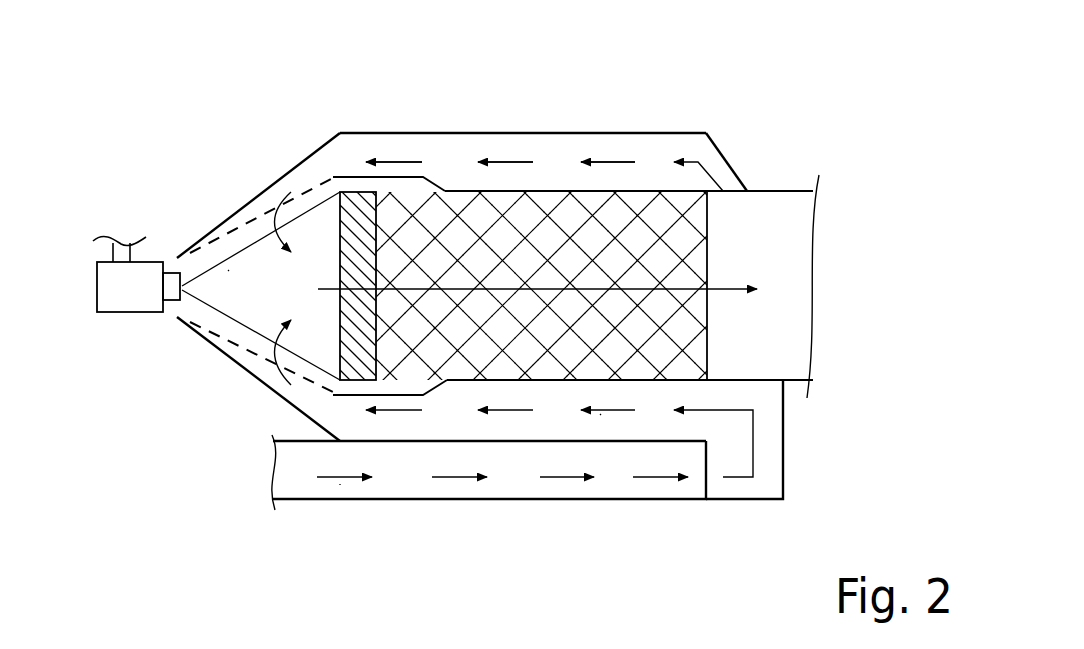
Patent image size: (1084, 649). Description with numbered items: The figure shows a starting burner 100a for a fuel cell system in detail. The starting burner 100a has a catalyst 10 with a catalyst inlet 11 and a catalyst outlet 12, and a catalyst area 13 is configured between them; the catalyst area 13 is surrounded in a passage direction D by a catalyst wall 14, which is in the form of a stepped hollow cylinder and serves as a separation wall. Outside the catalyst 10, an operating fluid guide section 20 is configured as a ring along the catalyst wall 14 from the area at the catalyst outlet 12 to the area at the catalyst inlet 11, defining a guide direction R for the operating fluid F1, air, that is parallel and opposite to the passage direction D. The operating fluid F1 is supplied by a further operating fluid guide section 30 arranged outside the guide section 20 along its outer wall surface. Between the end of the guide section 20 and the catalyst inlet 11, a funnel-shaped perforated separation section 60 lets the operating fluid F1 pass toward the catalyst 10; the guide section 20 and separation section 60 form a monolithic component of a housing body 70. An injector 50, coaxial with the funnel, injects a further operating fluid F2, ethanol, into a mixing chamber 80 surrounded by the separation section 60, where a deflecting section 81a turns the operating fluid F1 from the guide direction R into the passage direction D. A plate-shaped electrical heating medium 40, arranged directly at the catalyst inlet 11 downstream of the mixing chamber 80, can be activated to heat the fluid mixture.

The starting burner 100a is at (118, 76).
The catalyst 10 is at (450, 177).
The catalyst inlet 11 is at (333, 368).
The catalyst outlet 12 is at (721, 202).
The catalyst area 13 is at (678, 331).
The catalyst wall 14 is at (553, 188).
The operating fluid guide section 20 is at (497, 130).
The operating fluid guide section 30 is at (518, 503).
The heating medium 40 is at (356, 182).
The injector 50 is at (122, 316).
The perforated separation section 60 is at (251, 218).
The housing body 70 is at (661, 97).
The mixing chamber 80 is at (218, 322).
The deflecting section 81a is at (288, 169).
The passage direction D is at (721, 286).
The operating fluid F1 is at (339, 486).
The further operating fluid F2 is at (226, 268).
The guide direction R is at (603, 418).